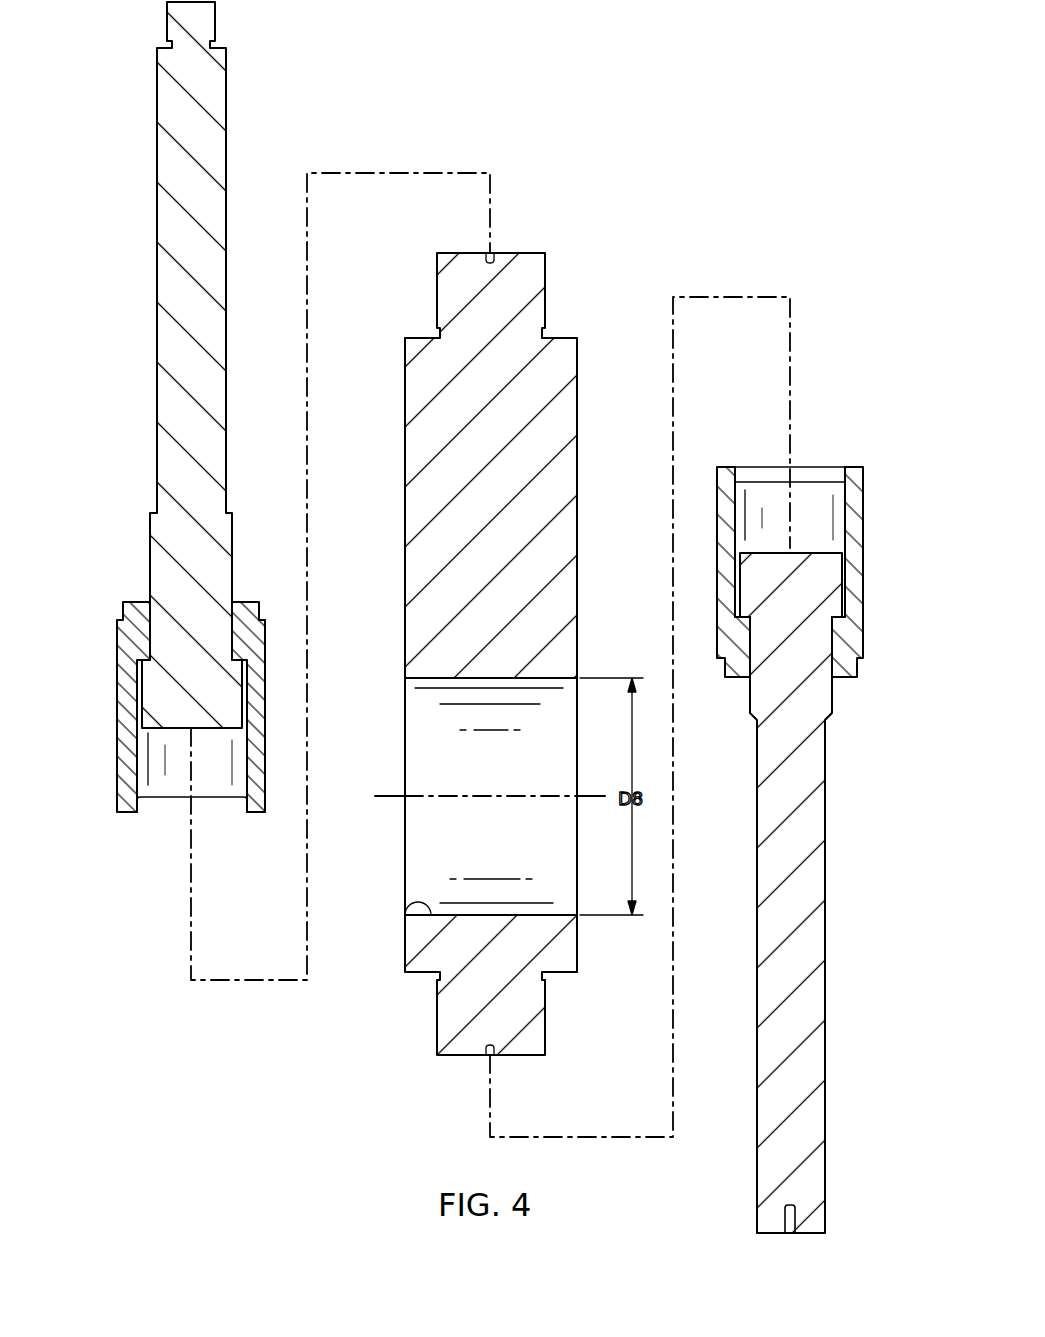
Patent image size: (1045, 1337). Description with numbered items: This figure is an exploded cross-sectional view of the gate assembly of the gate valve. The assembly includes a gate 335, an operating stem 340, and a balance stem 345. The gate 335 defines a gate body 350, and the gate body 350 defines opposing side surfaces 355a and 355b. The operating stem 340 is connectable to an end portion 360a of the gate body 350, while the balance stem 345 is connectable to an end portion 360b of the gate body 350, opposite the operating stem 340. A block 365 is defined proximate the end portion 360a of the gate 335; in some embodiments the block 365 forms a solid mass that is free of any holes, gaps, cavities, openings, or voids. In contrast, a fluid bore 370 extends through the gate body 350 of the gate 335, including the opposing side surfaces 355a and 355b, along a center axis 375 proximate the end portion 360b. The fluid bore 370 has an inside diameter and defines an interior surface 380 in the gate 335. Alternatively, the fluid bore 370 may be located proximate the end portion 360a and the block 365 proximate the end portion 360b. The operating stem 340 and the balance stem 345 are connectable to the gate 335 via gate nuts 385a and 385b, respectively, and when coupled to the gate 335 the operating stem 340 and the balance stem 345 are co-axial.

The gate 335 is at (401, 400).
The operating stem 340 is at (154, 329).
The balance stem 345 is at (830, 940).
The gate body 350 is at (405, 515).
The side surface 355a is at (404, 938).
The side surface 355b is at (578, 938).
The end portion 360a is at (437, 300).
The end portion 360b is at (437, 1022).
The block 365 is at (513, 531).
The fluid bore 370 is at (513, 778).
The center axis 375 is at (393, 796).
The interior surface 380 is at (405, 905).
The gate nut 385a is at (117, 752).
The gate nut 385b is at (863, 527).